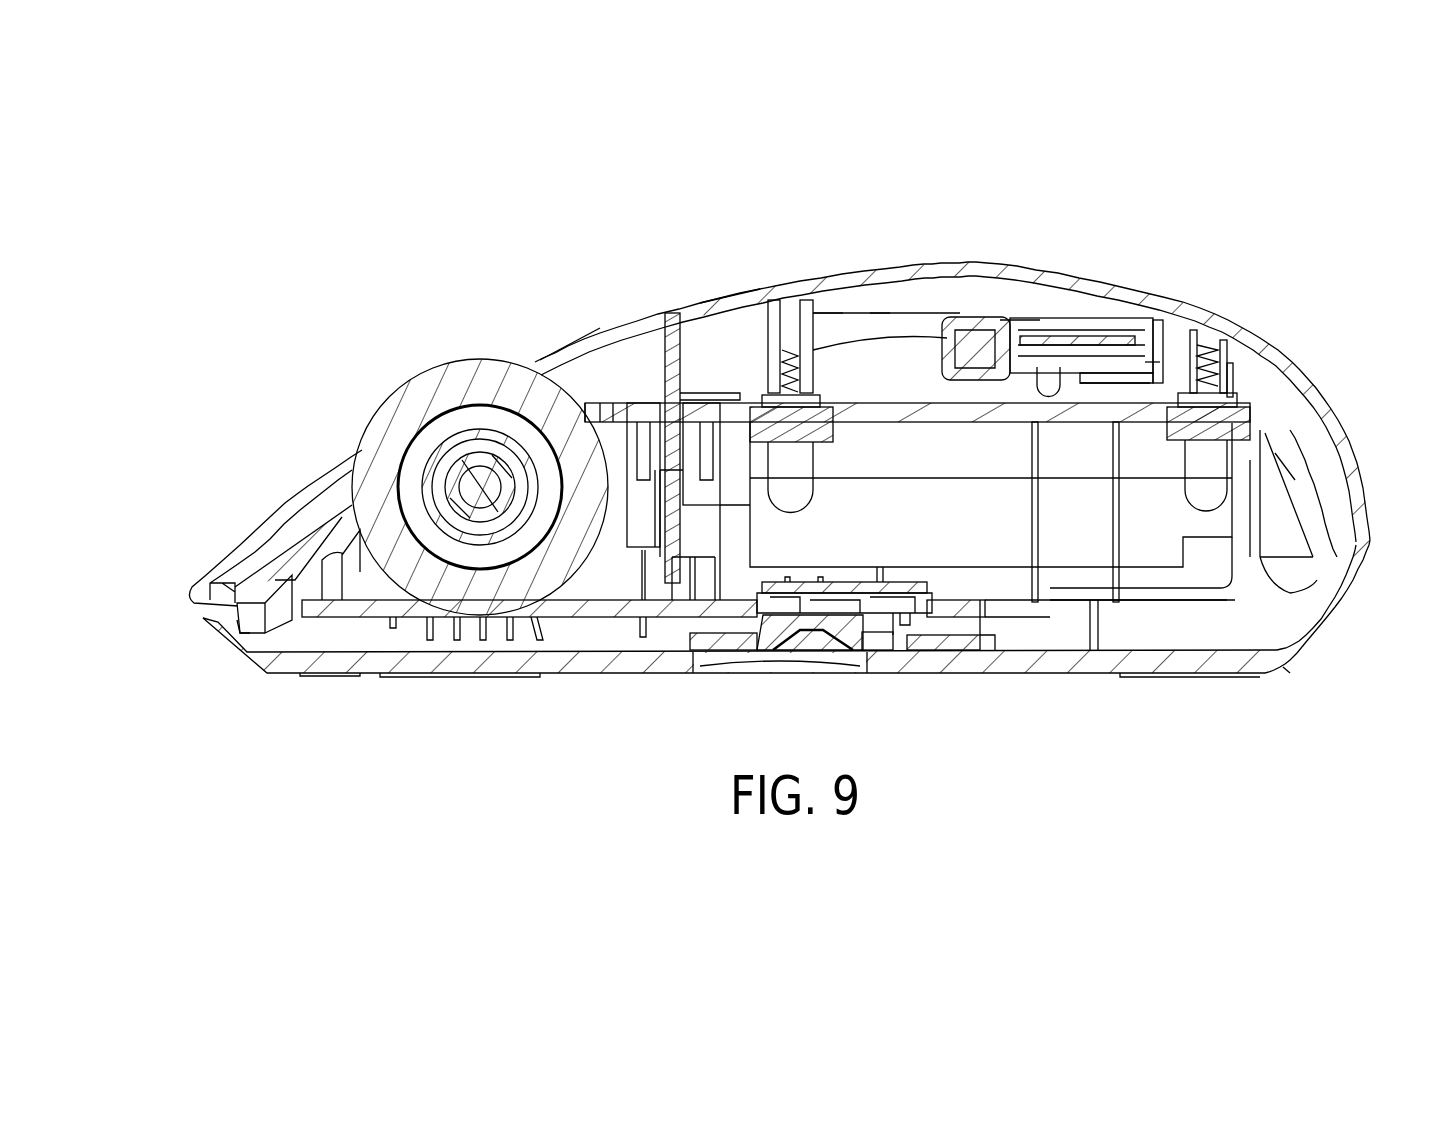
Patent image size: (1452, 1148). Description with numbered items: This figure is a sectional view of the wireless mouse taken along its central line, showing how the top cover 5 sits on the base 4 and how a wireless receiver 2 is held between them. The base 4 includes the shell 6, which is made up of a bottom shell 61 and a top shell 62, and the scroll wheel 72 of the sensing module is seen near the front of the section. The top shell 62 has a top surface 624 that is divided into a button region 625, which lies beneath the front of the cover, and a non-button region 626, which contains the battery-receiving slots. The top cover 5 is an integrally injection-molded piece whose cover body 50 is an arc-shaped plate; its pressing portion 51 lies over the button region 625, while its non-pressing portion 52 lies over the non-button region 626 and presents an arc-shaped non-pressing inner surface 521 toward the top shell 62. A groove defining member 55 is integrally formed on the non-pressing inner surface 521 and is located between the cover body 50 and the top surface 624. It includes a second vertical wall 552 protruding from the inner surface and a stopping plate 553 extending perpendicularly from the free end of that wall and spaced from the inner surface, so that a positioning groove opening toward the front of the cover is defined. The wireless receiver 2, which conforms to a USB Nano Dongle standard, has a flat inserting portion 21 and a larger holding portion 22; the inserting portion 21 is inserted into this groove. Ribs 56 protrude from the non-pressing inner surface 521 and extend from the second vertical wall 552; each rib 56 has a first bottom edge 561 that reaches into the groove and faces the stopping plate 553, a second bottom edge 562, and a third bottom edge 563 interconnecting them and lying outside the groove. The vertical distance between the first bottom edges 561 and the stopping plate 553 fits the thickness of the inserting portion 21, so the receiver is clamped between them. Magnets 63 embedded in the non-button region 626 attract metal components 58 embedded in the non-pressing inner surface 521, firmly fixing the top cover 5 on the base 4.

The wireless receiver 2 is at (1083, 271).
The base 4 is at (1298, 678).
The top cover 5 is at (1095, 258).
The shell 6 is at (805, 447).
The inserting portion 21 is at (1147, 363).
The holding portion 22 is at (982, 312).
The cover body 50 is at (773, 290).
The pressing portion 51 is at (585, 350).
The non-pressing portion 52 is at (1000, 275).
The groove defining member 55 is at (1150, 383).
The rib 56 is at (843, 307).
The metal component 58 is at (1227, 365).
The bottom shell 61 is at (1317, 617).
The top shell 62 is at (1335, 530).
The magnet 63 is at (747, 425).
The scroll wheel 72 is at (405, 398).
The non-pressing inner surface 521 is at (877, 303).
The second vertical wall 552 is at (1158, 362).
The stopping plate 553 is at (1200, 355).
The first bottom edge 561 is at (1113, 333).
The second bottom edge 562 is at (962, 312).
The third bottom edge 563 is at (1063, 327).
The top surface 624 is at (813, 380).
The button region 625 is at (608, 400).
The non-button region 626 is at (757, 427).